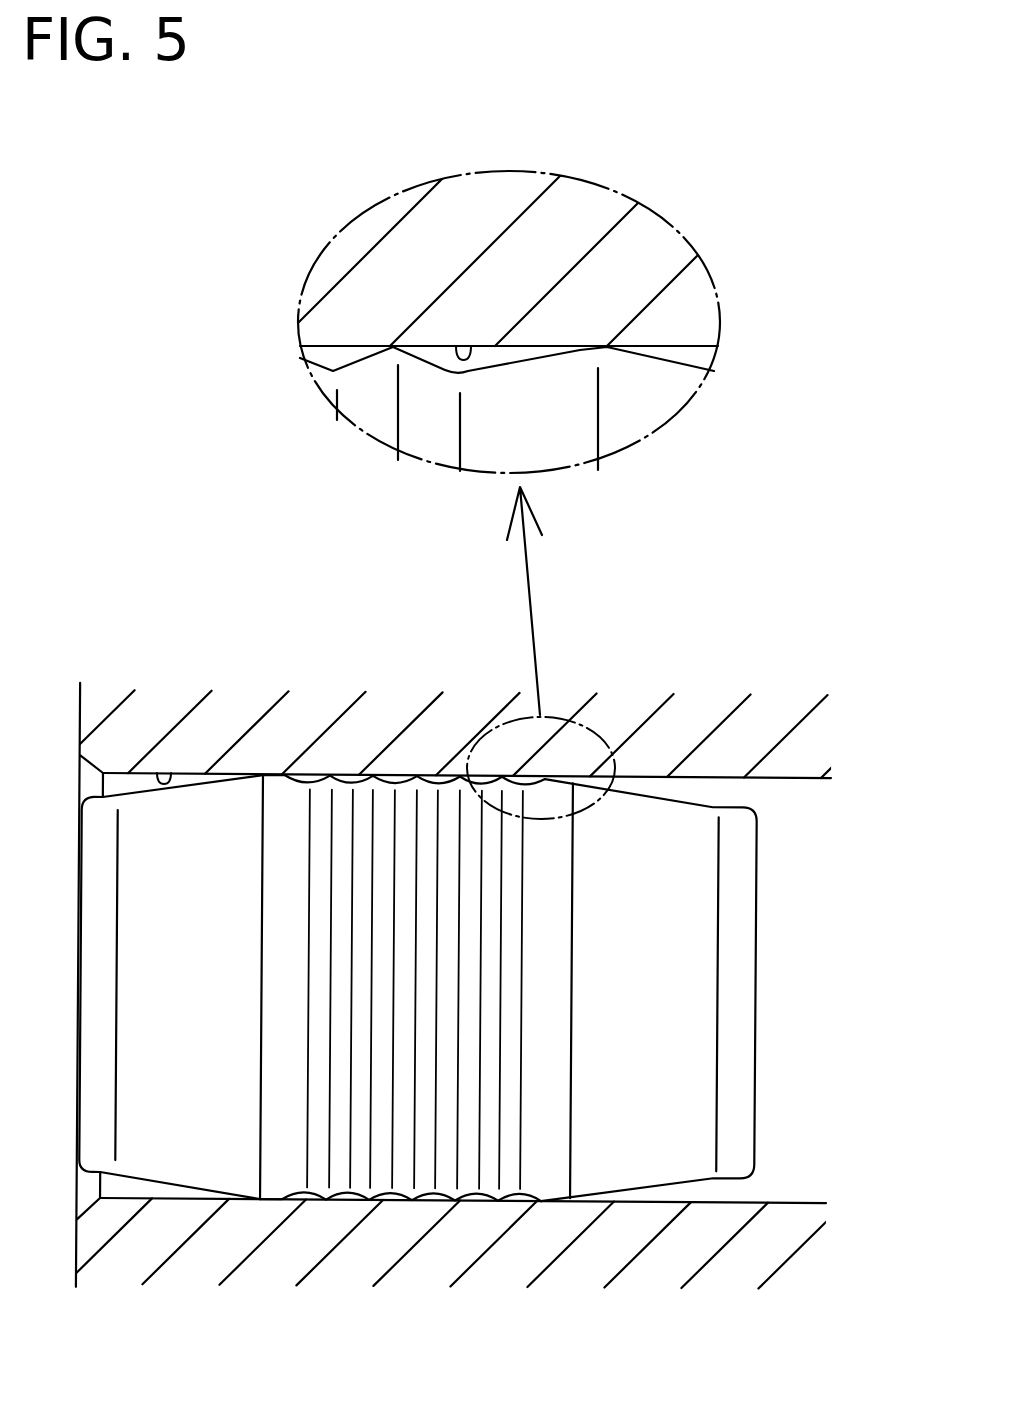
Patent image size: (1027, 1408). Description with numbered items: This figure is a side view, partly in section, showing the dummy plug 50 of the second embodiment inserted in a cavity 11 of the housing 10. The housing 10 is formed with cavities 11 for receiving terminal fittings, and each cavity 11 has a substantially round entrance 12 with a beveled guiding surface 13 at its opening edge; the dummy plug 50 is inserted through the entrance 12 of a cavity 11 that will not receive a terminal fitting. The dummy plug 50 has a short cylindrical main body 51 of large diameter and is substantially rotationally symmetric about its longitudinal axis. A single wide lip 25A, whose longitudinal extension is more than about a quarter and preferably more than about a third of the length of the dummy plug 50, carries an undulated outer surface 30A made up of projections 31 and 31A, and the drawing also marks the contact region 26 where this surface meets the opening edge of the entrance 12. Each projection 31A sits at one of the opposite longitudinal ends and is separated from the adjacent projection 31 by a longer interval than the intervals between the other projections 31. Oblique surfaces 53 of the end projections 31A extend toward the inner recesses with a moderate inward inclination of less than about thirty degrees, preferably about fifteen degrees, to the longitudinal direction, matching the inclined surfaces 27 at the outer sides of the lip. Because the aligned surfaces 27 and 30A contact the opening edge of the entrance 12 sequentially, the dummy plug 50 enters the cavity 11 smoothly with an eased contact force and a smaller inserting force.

The housing 10 is at (738, 620).
The cavity 11 is at (772, 778).
The entrance 12 is at (157, 773).
The guiding surface 13 is at (76, 768).
The lip 25A is at (366, 1212).
The contact portion 26 is at (435, 776).
The inclined surfaces 27 is at (217, 773).
The undulated surface 30A is at (350, 773).
The projections 31 is at (390, 340).
The end projections 31A is at (270, 773).
The dummy plug 50 is at (803, 903).
The main body 51 is at (735, 1163).
The oblique surfaces 53 is at (293, 773).